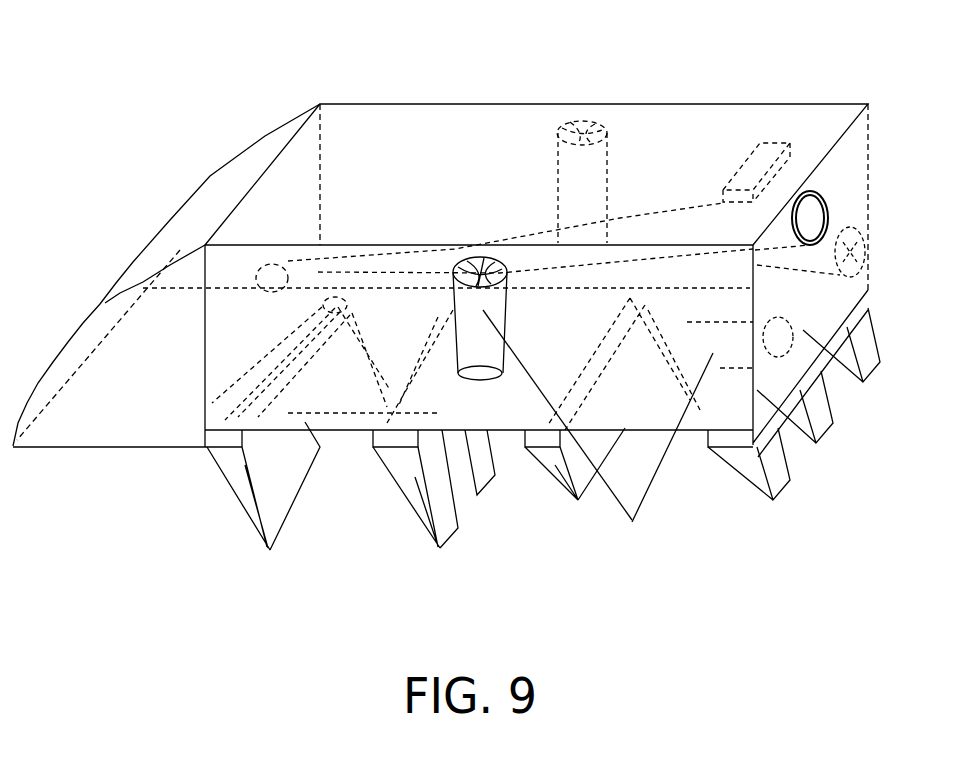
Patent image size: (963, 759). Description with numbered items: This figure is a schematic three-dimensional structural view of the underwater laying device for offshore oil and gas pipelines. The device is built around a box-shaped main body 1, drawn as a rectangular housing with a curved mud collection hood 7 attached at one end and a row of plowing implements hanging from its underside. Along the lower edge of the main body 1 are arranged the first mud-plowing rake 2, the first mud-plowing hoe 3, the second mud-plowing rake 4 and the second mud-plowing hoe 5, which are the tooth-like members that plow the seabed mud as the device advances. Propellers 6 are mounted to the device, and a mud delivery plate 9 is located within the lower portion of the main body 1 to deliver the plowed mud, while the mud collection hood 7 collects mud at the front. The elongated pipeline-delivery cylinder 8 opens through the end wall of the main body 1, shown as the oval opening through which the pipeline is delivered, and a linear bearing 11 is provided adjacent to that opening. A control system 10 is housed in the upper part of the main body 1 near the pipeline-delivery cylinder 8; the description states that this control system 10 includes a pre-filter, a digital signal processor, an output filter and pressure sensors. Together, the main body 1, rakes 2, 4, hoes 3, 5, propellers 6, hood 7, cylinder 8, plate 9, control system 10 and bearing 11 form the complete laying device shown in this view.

The box-shaped main body 1 is at (502, 153).
The first mud-plowing rake 2 is at (753, 492).
The first mud-plowing hoe 3 is at (578, 500).
The second mud-plowing rake 4 is at (440, 548).
The second mud-plowing hoe 5 is at (270, 550).
The propellers 6 is at (632, 522).
The mud collection hood 7 is at (175, 233).
The elongated pipeline-delivery cylinder 8 is at (812, 218).
The mud delivery plate 9 is at (216, 403).
The control system 10 is at (760, 150).
The linear bearing 11 is at (823, 205).